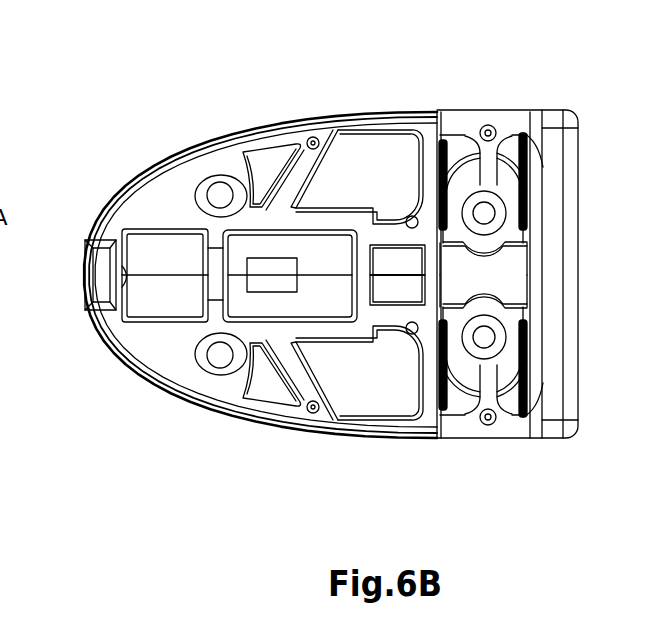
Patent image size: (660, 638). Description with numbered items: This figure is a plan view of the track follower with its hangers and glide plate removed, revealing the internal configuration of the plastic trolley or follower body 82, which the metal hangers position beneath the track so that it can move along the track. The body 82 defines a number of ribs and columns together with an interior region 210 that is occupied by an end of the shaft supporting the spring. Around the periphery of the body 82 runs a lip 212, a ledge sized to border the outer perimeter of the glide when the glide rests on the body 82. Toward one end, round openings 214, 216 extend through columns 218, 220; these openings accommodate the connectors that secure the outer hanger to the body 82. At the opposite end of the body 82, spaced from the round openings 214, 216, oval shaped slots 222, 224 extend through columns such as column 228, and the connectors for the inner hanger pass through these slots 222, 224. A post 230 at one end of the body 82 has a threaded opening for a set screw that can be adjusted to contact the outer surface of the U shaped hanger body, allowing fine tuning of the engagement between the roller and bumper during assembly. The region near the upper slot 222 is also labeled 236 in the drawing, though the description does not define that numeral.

The follower body 82 is at (375, 390).
The interior region 210 is at (320, 253).
The lip 212 is at (388, 112).
The round opening 214 is at (498, 212).
The round opening 216 is at (498, 337).
The column 218 is at (503, 190).
The column 220 is at (507, 372).
The oval shaped slot 222 is at (219, 188).
The oval shaped slot 224 is at (218, 367).
The column 228 is at (193, 408).
The post 230 is at (100, 280).
The upper cutout 236 is at (195, 176).